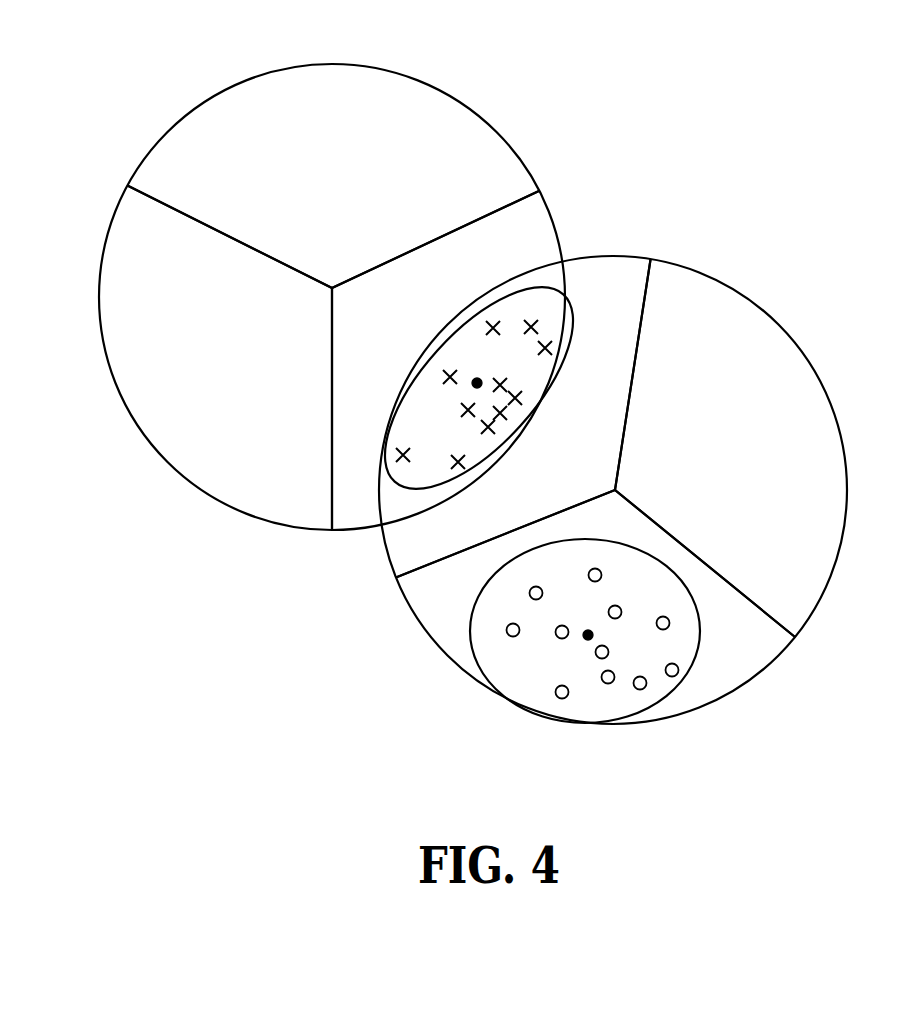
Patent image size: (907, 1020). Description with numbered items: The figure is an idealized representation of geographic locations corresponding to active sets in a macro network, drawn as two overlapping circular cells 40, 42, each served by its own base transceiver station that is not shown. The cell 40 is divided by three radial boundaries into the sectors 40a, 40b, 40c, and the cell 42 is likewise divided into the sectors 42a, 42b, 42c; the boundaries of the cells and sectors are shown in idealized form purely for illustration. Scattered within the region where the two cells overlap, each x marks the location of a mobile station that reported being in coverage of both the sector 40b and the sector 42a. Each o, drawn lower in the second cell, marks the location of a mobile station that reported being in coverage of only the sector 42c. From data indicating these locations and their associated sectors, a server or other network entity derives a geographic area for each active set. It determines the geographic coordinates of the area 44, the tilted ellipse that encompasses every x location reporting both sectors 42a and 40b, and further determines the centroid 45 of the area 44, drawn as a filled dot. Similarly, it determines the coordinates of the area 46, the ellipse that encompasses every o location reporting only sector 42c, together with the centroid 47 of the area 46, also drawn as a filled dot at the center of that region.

The cell 40 is at (492, 128).
The sector 40a is at (333, 237).
The sector 40b is at (435, 360).
The sector 40c is at (229, 358).
The cell 42 is at (423, 627).
The sector 42a is at (523, 418).
The sector 42b is at (705, 448).
The sector 42c is at (595, 563).
The area 44 is at (572, 340).
The centroid 45 is at (471, 374).
The area 46 is at (698, 624).
The centroid 47 is at (587, 647).